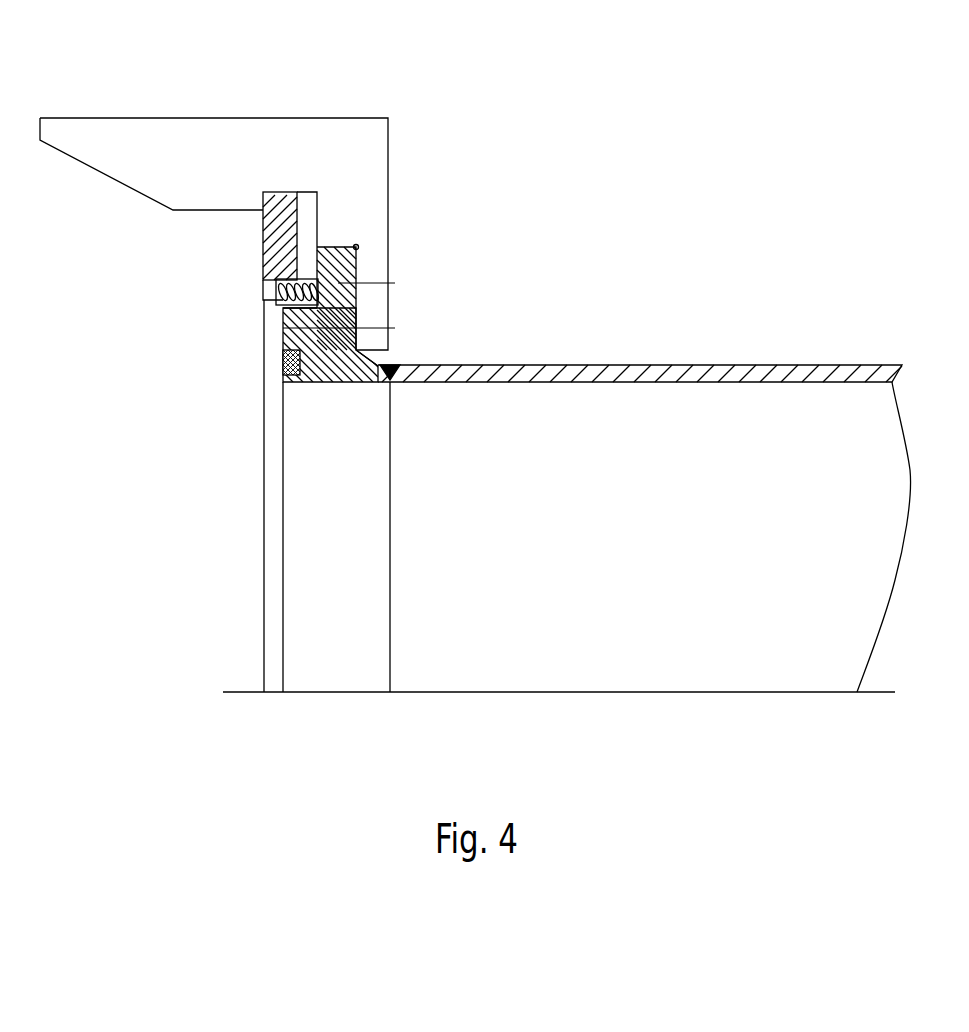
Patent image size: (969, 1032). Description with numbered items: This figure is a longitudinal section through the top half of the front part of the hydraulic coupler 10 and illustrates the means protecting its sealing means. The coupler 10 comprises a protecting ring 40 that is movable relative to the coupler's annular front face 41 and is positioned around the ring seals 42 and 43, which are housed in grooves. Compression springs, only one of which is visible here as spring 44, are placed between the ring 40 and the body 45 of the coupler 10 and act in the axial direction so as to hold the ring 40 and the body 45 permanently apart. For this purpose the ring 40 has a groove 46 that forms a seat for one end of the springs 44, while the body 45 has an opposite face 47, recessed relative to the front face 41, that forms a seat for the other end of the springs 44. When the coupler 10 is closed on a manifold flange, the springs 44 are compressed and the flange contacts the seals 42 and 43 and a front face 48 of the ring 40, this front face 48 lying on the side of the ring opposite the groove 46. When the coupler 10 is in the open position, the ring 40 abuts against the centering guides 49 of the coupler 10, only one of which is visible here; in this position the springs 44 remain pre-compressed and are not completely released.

The hydraulic coupler 10 is at (637, 291).
The protecting ring 40 is at (268, 232).
The annular front face 41 is at (279, 493).
The ring seal 42 is at (283, 330).
The ring seal 43 is at (283, 360).
The compression spring 44 is at (312, 280).
The body 45 is at (436, 356).
The groove 46 is at (300, 298).
The opposite face 47 is at (283, 310).
The front face 48 is at (259, 268).
The centering guide 49 is at (127, 137).